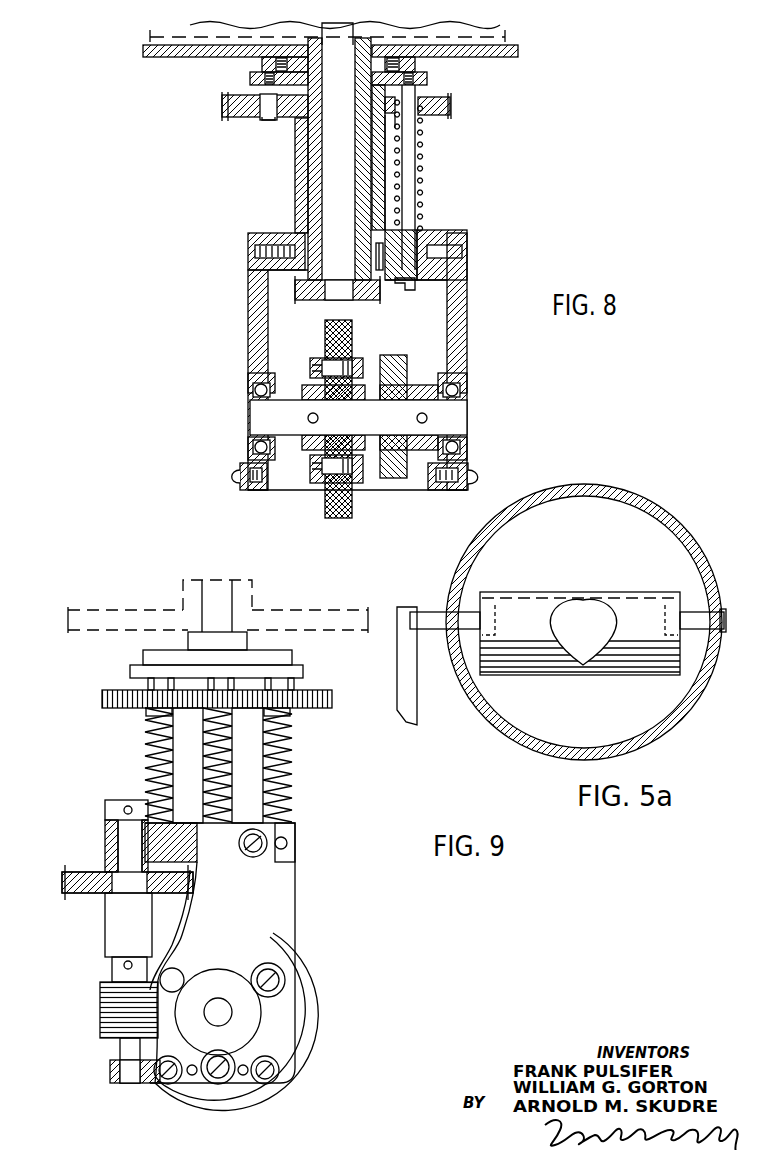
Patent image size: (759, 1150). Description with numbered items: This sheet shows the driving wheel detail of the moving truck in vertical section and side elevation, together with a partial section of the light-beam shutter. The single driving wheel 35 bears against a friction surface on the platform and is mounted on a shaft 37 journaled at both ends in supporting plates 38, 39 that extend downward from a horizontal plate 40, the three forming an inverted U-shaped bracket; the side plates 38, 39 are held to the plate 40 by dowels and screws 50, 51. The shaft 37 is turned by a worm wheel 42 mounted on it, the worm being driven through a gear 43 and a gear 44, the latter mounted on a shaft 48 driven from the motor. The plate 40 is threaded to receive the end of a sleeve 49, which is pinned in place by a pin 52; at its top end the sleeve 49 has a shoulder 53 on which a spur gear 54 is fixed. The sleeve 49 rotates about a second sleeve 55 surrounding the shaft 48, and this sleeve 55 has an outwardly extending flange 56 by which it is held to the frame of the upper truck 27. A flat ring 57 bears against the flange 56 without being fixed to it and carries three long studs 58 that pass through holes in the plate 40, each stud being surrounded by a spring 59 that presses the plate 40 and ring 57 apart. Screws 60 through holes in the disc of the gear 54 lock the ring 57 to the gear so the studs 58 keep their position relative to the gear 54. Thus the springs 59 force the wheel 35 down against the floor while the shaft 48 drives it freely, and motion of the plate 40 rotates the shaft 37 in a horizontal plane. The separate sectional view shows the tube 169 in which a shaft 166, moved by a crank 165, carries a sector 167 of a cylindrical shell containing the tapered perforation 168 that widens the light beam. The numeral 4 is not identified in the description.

In FIG. 8, the upper truck 27 is at (478, 49).
In FIG. 8, the driving wheel 35 is at (326, 498).
In FIG. 9, the driving wheel 35 is at (312, 996).
In FIG. 8, the shaft 37 is at (455, 418).
In FIG. 9, the shaft 37 is at (225, 1000).
In FIG. 8, the supporting plate 38 is at (466, 300).
In FIG. 9, the supporting plate 38 is at (285, 908).
In FIG. 8, the supporting plate 39 is at (255, 326).
In FIG. 8, the horizontal plate 40 is at (460, 240).
In FIG. 8, the worm wheel 42 is at (402, 467).
In FIG. 9, the worm wheel 42 is at (162, 968).
In FIG. 9, the gear 43 is at (73, 895).
In FIG. 9, the worm 4 is at (108, 1032).
In FIG. 8, the gear 44 is at (295, 290).
In FIG. 8, the shaft 48 is at (363, 168).
In FIG. 8, the sleeve 49 is at (296, 174).
In FIG. 8, the dowels and screws 50 is at (455, 251).
In FIG. 8, the dowels and screws 51 is at (250, 249).
In FIG. 8, the pin 52 is at (382, 270).
In FIG. 8, the shoulder 53 is at (392, 108).
In FIG. 8, the spur gear 54 is at (451, 108).
In FIG. 9, the spur gear 54 is at (318, 697).
In FIG. 8, the second sleeve 55 is at (372, 182).
In FIG. 8, the flange 56 is at (415, 63).
In FIG. 8, the flat ring 57 is at (428, 80).
In FIG. 9, the flat ring 57 is at (303, 670).
In FIG. 8, the studs 58 is at (410, 190).
In FIG. 9, the studs 58 is at (150, 775).
In FIG. 9, the springs 59 is at (150, 750).
In FIG. 8, the screws 60 is at (268, 120).
In FIG. 9, the screws 60 is at (146, 713).
In FIG. 5A, the crank 165 is at (409, 656).
In FIG. 5A, the shaft 166 is at (441, 615).
In FIG. 5A, the sector of cylindrical shell 167 is at (620, 670).
In FIG. 5A, the tapered perforation 168 is at (578, 615).
In FIG. 5A, the tube 169 is at (642, 503).